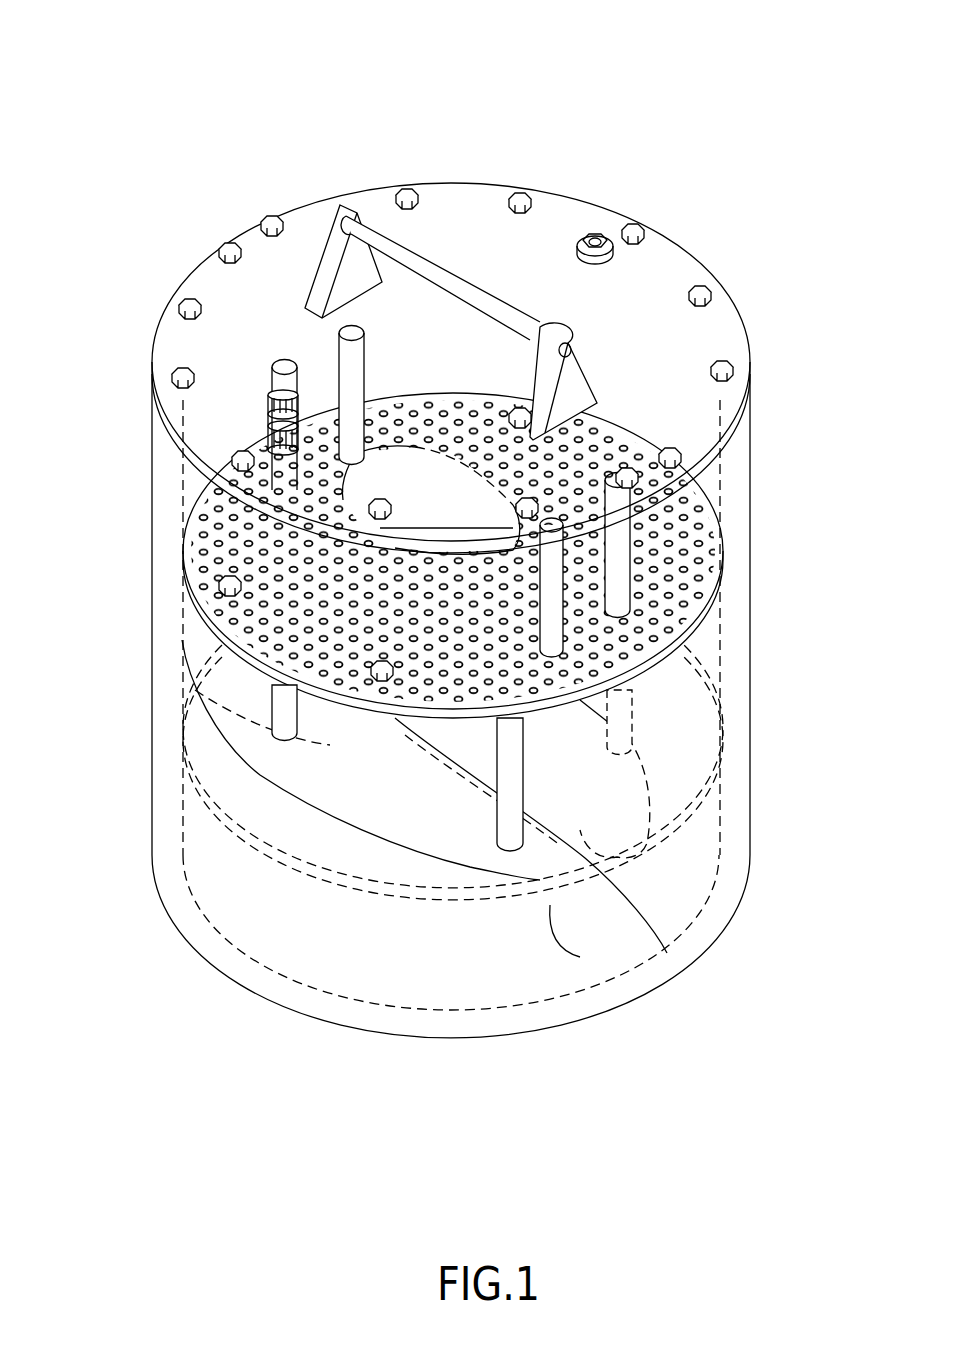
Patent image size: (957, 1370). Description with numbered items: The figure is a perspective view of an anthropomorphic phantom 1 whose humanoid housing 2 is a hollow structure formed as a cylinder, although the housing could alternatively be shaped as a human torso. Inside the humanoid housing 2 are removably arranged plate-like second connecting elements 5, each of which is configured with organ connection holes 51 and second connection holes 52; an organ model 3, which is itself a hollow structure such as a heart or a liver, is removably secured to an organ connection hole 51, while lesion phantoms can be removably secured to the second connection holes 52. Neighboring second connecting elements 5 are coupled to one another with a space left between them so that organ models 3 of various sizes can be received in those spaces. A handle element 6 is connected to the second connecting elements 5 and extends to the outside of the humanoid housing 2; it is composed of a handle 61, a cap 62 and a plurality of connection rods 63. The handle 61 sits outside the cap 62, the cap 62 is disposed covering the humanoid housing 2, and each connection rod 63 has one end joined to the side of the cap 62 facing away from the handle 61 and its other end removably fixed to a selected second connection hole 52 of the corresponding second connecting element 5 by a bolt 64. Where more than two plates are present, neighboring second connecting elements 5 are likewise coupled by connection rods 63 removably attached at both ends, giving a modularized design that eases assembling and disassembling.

The anthropomorphic phantom 1 is at (452, 120).
The humanoid housing 2 is at (756, 480).
The organ model 3 is at (513, 529).
The second connecting element 5 is at (446, 646).
The organ connection hole 51 is at (293, 632).
The second connection hole 52 is at (293, 655).
The handle element 6 is at (471, 250).
The handle 61 is at (372, 215).
The cap 62 is at (235, 298).
The connection rod 63 is at (618, 562).
The bolt 64 is at (380, 672).